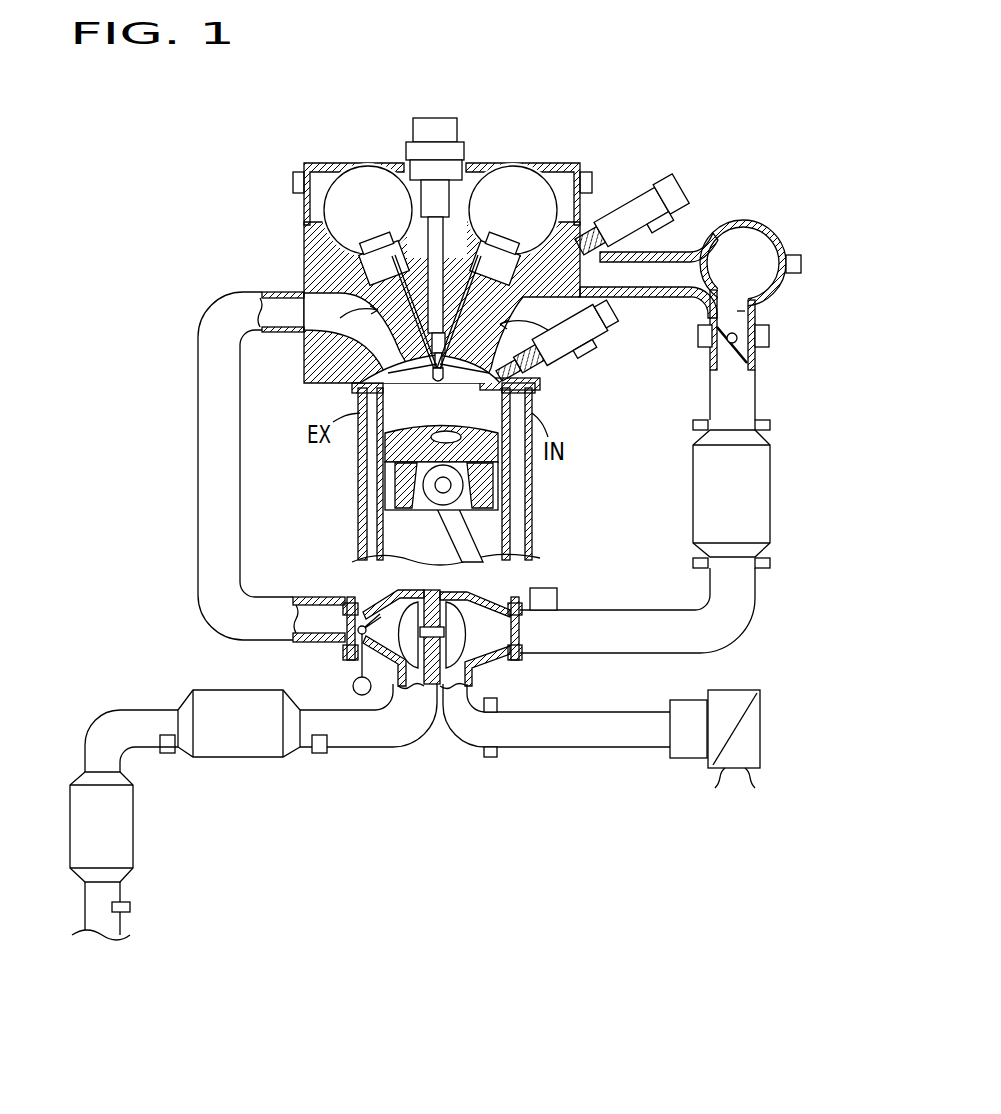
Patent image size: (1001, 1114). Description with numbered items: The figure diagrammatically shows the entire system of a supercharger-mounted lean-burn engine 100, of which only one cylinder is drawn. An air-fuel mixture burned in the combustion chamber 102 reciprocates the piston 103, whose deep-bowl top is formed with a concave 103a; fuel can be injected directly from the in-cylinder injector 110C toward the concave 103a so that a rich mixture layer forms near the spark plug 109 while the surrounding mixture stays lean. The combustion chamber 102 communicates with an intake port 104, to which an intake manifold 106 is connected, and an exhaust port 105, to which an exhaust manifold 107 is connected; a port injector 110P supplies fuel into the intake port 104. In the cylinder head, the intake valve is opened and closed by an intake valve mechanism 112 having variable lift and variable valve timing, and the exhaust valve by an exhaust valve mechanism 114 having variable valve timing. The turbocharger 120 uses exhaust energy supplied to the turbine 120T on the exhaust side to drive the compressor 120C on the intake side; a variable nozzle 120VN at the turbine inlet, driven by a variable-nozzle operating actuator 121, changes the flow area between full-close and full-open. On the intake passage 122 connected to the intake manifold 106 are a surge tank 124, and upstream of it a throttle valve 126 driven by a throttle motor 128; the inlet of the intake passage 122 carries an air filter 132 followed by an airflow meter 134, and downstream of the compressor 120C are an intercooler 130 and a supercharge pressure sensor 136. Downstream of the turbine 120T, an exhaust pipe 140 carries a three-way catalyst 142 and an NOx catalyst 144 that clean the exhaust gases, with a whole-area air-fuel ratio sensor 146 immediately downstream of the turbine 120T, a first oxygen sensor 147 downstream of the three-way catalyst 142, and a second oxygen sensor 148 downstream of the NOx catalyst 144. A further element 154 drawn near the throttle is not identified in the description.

The engine 100 is at (600, 453).
The combustion chamber 102 is at (372, 430).
The piston 103 is at (427, 500).
The concave 103a is at (457, 433).
The intake port 104 is at (538, 382).
The exhaust port 105 is at (313, 380).
The intake manifold 106 is at (658, 300).
The exhaust manifold 107 is at (277, 290).
The spark plug 109 is at (438, 383).
The port injector 110P is at (651, 186).
The in-cylinder injector 110C is at (609, 347).
The intake valve mechanism 112 is at (537, 164).
The exhaust valve mechanism 114 is at (352, 163).
The turbocharger 120 is at (432, 777).
The turbine 120T is at (397, 614).
The compressor 120C is at (482, 611).
The variable nozzle 120VN is at (342, 607).
The variable-nozzle operating actuator 121 is at (353, 685).
The intake passage 122 is at (538, 747).
The surge tank 124 is at (743, 217).
The throttle valve 126 is at (734, 330).
The throttle motor 128 is at (769, 337).
The intercooler 130 is at (770, 480).
The air filter 132 is at (750, 690).
The airflow meter 134 is at (687, 758).
The supercharge pressure sensor 136 is at (556, 596).
The exhaust pipe 140 is at (357, 747).
The three-way catalyst 142 is at (242, 748).
The NOx catalyst 144 is at (120, 833).
The whole-area air-fuel ratio sensor 146 is at (318, 753).
The first oxygen sensor 147 is at (168, 753).
The second oxygen sensor 148 is at (130, 907).
The throttle body 154 is at (698, 337).